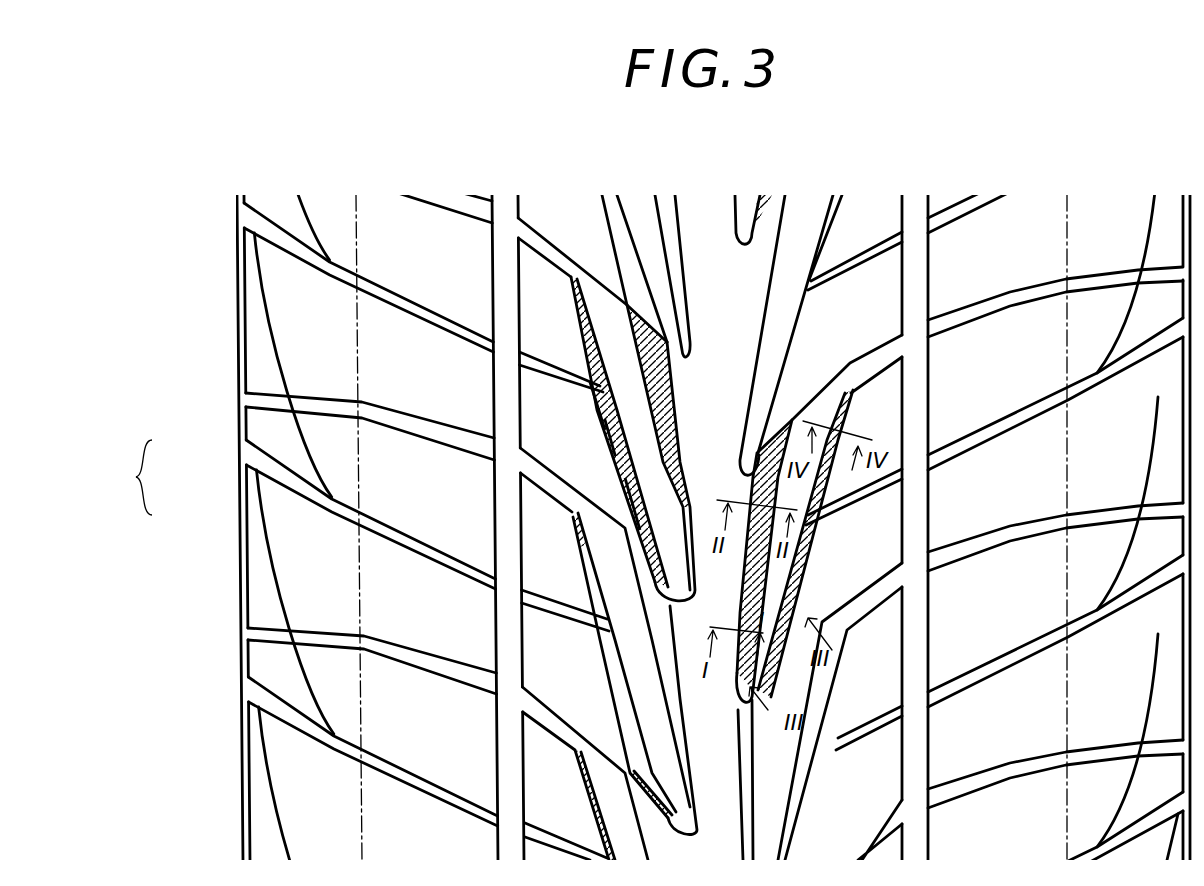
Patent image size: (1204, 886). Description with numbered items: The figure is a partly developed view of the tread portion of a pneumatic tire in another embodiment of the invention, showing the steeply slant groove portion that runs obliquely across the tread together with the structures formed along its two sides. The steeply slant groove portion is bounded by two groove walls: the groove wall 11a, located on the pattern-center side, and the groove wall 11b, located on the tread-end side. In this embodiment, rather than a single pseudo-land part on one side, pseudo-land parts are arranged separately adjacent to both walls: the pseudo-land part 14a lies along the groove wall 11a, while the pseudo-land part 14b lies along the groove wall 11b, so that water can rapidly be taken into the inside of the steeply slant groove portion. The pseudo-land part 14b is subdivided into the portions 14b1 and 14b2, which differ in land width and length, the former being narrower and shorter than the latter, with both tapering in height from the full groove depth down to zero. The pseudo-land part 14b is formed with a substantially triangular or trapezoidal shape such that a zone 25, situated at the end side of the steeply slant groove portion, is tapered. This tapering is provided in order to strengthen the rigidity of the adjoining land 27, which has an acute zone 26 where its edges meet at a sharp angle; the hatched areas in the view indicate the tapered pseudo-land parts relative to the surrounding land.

The land 27 is at (540, 323).
The zone of the pseudo-land part 25 is at (574, 282).
The acute zone 26 is at (590, 380).
The pseudo-land part 14a is at (678, 407).
The pseudo-land part 14b is at (366, 455).
The pseudo-land part 14b1 is at (593, 380).
The pseudo-land part 14b2 is at (627, 477).
The groove wall 11b is at (617, 705).
The groove wall 11a is at (677, 700).